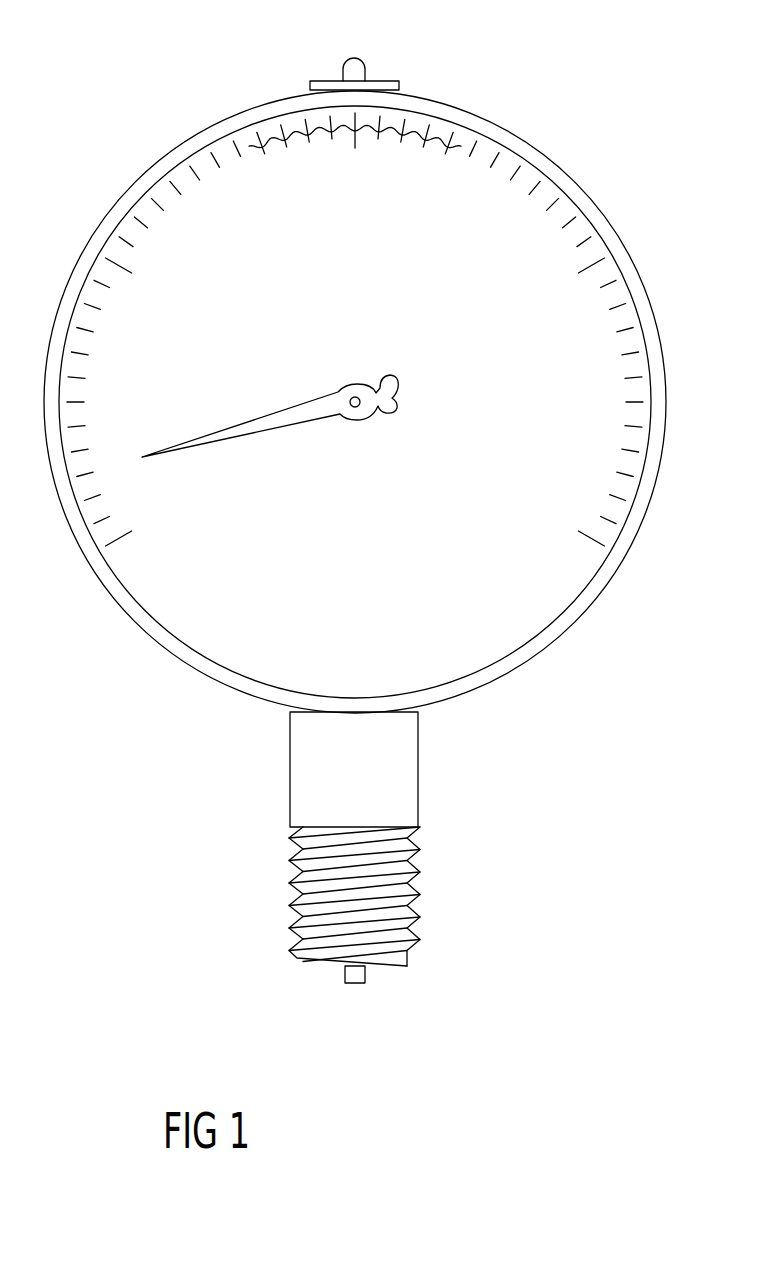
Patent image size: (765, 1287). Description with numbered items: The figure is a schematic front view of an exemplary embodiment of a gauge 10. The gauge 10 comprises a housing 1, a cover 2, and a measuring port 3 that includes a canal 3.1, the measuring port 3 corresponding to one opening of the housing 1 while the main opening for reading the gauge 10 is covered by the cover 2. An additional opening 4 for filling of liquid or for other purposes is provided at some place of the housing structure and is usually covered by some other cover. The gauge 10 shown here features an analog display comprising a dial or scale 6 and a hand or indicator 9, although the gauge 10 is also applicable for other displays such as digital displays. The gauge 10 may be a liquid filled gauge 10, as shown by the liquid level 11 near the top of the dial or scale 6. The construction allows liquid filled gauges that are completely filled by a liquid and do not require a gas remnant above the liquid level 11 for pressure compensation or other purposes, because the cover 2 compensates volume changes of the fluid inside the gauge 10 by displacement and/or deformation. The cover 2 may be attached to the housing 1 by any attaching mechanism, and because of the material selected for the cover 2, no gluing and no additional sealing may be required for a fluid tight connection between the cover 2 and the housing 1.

The housing 1 is at (555, 158).
The cover 2 is at (552, 585).
The measuring port 3 is at (455, 879).
The canal 3.1 is at (346, 1003).
The additional opening 4 is at (323, 80).
The dial or scale 6 is at (93, 513).
The hand or indicator 9 is at (223, 428).
The gauge 10 is at (361, 548).
The liquid level 11 is at (422, 128).